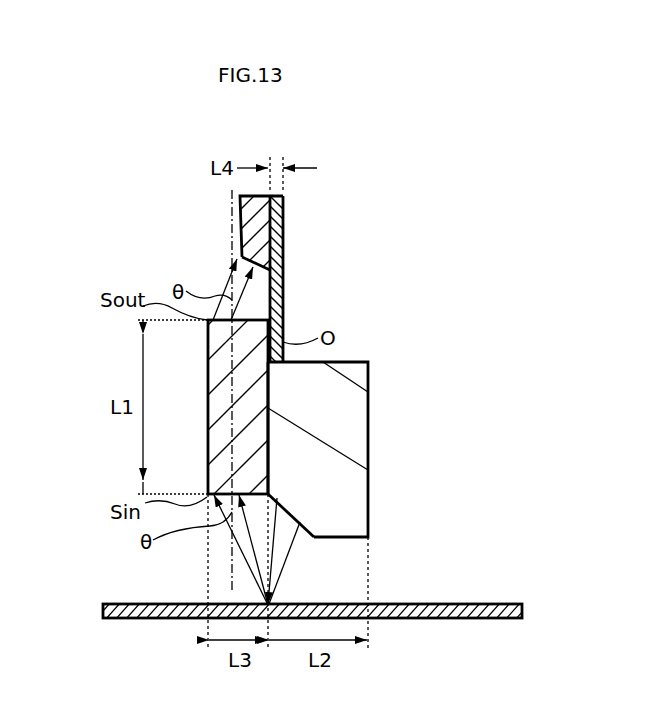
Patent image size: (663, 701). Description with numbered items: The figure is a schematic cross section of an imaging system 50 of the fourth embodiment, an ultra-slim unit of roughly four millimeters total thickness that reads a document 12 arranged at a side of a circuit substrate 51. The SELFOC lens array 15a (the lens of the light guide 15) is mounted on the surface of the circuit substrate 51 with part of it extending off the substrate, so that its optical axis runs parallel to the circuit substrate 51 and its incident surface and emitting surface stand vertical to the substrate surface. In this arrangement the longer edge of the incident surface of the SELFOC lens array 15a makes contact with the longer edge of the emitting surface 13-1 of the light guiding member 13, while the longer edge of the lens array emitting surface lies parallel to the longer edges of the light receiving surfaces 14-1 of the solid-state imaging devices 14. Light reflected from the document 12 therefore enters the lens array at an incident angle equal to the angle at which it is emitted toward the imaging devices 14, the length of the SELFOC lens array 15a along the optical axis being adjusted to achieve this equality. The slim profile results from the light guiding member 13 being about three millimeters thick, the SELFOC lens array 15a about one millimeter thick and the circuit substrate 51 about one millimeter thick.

The document 12 is at (490, 611).
The light guiding member 13 is at (340, 482).
The emitting surface of the light guiding member 13-1 is at (316, 522).
The solid-state imaging devices 14 is at (283, 222).
The light receiving surfaces 14-1 is at (283, 250).
The light guide 15 is at (220, 398).
The SELFOC lens array 15a is at (208, 400).
The imaging system 50 is at (200, 272).
The circuit substrate 51 is at (283, 300).